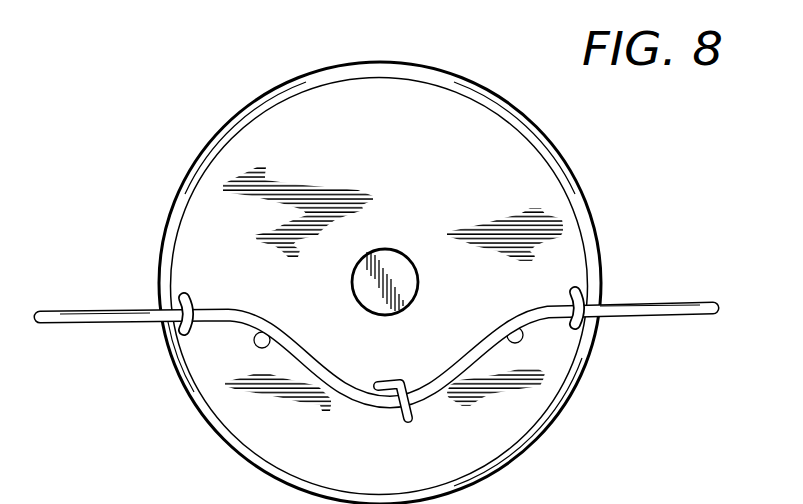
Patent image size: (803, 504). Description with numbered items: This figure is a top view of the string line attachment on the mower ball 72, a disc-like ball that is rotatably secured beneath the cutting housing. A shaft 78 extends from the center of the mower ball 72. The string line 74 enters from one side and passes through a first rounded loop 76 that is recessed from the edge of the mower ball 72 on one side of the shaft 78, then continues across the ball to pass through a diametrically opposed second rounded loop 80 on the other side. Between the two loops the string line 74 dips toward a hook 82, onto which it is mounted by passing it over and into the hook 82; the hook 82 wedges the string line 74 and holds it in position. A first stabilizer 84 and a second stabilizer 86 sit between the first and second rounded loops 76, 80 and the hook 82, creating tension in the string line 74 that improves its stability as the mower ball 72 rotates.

The mower ball 72 is at (230, 157).
The string line 74 is at (236, 311).
The first rounded loop 76 is at (190, 328).
The shaft 78 is at (395, 262).
The second rounded loop 80 is at (571, 292).
The hook 82 is at (402, 418).
The first stabilizer 84 is at (270, 341).
The second stabilizer 86 is at (507, 330).